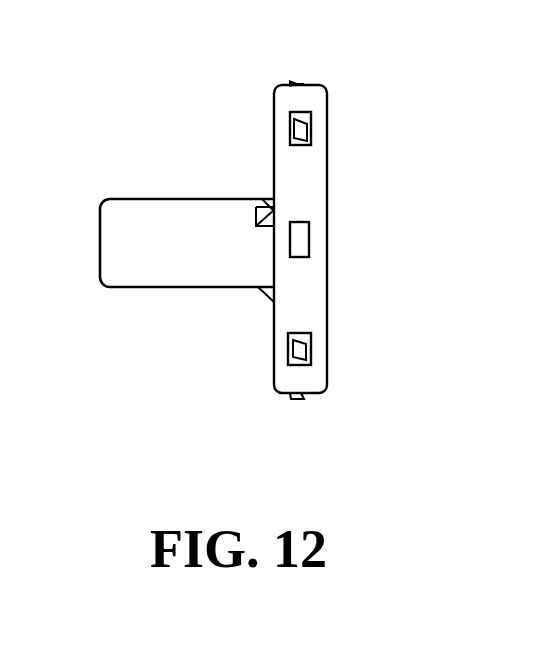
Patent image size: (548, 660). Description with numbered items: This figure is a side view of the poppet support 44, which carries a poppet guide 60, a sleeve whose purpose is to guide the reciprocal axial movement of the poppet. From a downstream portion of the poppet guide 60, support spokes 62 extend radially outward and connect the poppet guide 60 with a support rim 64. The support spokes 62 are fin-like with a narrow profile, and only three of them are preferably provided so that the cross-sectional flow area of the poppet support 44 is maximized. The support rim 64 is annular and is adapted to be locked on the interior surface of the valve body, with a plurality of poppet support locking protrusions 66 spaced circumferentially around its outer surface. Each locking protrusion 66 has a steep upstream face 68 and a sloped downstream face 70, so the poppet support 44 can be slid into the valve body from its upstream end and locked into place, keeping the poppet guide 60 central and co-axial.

The poppet support 44 is at (160, 96).
The poppet guide 60 is at (118, 198).
The support spokes 62 is at (262, 200).
The support rim 64 is at (300, 296).
The poppet support locking protrusions 66 is at (305, 125).
The steep upstream face 68 is at (290, 83).
The sloped downstream face 70 is at (298, 84).